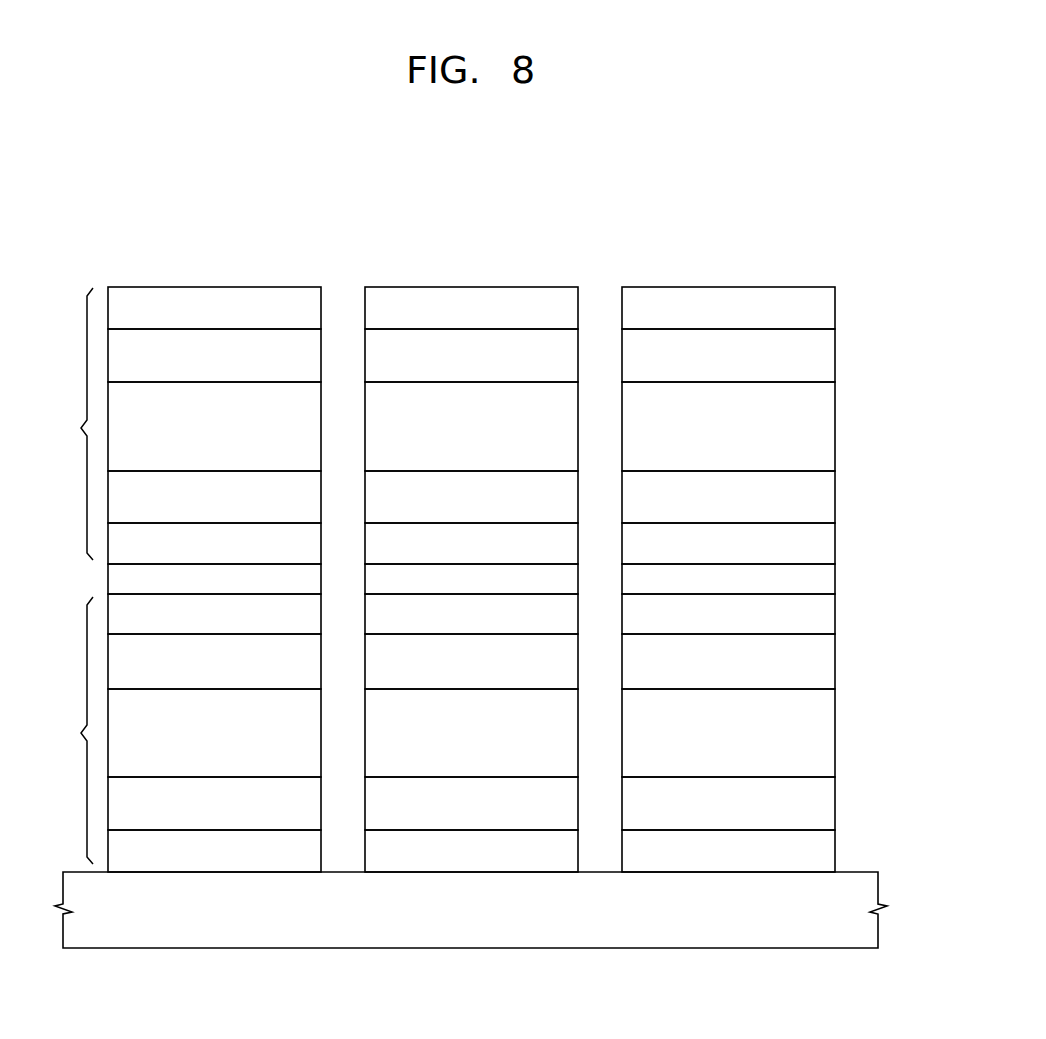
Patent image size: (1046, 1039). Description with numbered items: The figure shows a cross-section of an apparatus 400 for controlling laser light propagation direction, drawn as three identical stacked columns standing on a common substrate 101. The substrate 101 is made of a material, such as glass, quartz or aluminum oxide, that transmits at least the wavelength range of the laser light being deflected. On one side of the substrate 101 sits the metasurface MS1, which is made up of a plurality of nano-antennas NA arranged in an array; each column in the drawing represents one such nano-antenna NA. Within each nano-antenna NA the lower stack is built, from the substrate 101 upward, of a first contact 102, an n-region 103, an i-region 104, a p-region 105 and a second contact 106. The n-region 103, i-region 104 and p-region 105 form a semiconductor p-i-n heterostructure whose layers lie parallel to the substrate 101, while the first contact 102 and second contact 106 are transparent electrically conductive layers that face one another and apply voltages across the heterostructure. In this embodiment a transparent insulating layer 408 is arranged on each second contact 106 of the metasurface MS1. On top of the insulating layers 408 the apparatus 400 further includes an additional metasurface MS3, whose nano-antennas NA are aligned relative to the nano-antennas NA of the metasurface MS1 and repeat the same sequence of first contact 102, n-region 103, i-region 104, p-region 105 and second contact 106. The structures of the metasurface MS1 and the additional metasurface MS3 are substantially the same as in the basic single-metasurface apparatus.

The substrate 101 is at (101, 922).
The first contact 102 is at (471, 697).
The n-region 103 is at (471, 650).
The i-region 104 is at (471, 579).
The p-region 105 is at (471, 509).
The second contact 106 is at (471, 460).
The transparent insulating layer 408 is at (471, 577).
The apparatus for controlling laser light propagation direction 400 is at (876, 240).
The metasurface MS1 is at (862, 713).
The additional metasurface MS3 is at (860, 424).
The nano-antenna NA is at (68, 576).